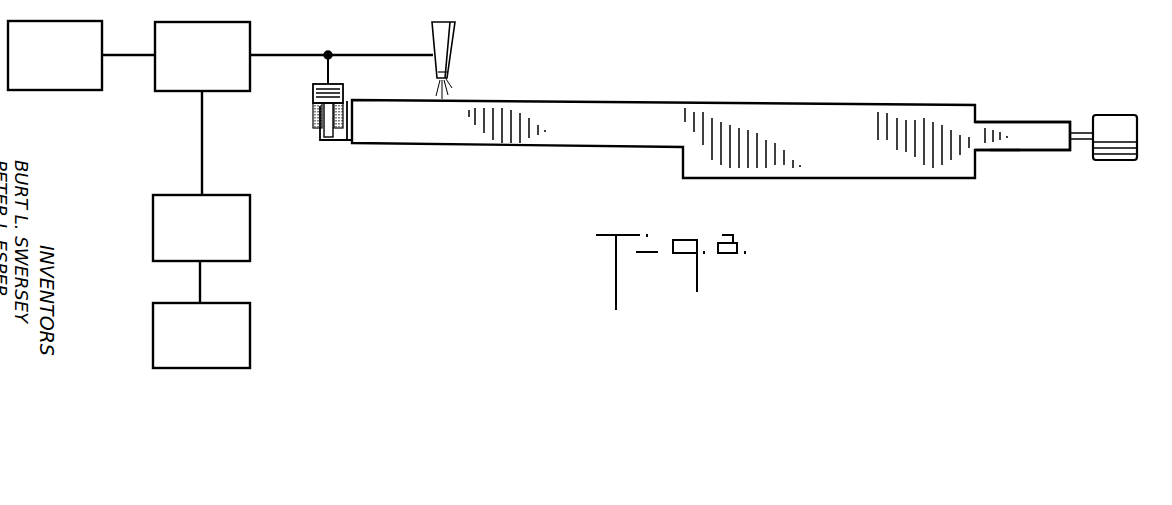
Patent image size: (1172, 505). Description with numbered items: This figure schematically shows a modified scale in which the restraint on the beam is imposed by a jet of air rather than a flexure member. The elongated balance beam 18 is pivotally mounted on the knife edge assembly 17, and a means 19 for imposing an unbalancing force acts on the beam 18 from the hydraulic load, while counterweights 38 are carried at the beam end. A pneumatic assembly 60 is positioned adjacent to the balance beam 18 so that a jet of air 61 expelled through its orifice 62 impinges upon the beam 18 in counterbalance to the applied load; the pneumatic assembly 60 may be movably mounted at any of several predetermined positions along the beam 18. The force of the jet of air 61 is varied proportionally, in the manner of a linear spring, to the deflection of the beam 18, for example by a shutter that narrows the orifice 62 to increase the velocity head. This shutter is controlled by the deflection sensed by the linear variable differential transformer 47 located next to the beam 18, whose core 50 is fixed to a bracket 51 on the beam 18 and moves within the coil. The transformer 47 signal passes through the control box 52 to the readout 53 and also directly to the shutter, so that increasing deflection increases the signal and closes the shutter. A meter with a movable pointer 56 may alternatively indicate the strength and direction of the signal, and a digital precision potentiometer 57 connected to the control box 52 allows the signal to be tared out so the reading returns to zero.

The digital precision potentiometer 57 is at (70, 66).
The control box 52 is at (216, 67).
The digital readout means 53 is at (215, 241).
The movable pointer 56 is at (215, 350).
The linear variable differential transformer 47 is at (309, 112).
The core 50 is at (324, 131).
The bracket 51 is at (340, 143).
The pneumatic assembly 60 is at (457, 38).
The jet of air 61 is at (434, 86).
The orifice 62 is at (455, 76).
The balance beam 18 is at (640, 103).
The means for imposing an unbalancing force 19 is at (1030, 120).
The knife edge assembly 17 is at (1003, 152).
The counterweights 38 is at (1125, 118).